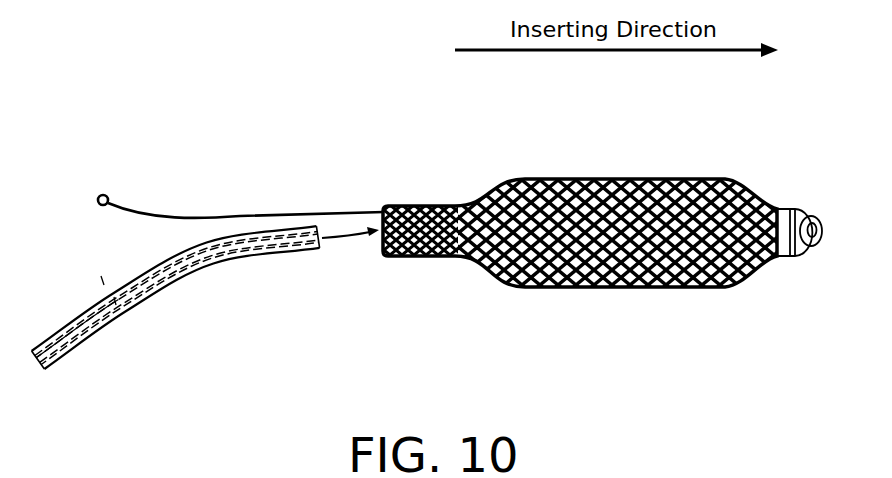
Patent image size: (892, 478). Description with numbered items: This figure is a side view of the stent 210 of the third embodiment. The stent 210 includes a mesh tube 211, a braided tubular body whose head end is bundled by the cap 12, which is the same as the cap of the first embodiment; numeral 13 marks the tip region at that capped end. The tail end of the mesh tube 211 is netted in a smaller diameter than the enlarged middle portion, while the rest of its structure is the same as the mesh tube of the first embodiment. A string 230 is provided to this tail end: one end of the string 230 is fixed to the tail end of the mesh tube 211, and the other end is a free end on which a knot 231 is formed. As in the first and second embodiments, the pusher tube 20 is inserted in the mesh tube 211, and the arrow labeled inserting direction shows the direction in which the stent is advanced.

The pusher tube 20 is at (208, 270).
The string 230 is at (268, 212).
The knot 231 is at (109, 194).
The stent 210 is at (496, 289).
The mesh tube 211 is at (597, 176).
The cap 12 is at (787, 209).
The tip opening 13 is at (823, 244).